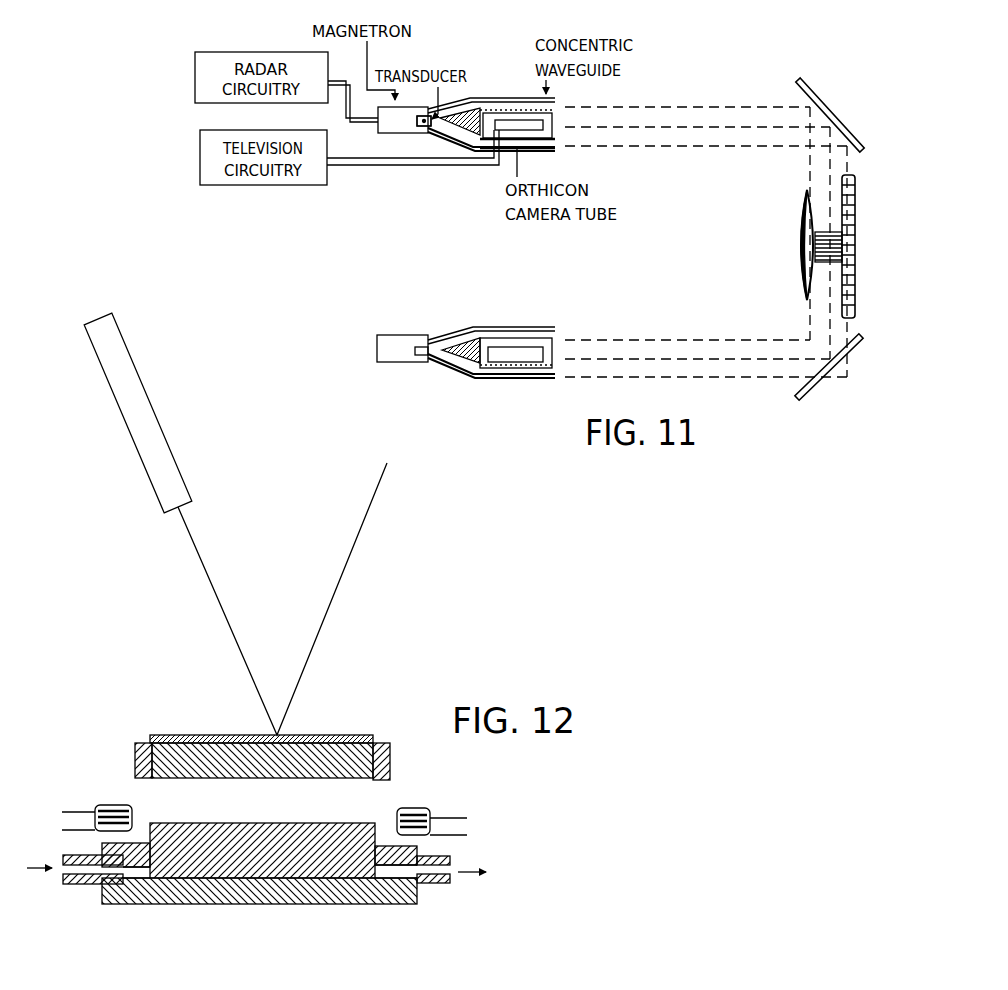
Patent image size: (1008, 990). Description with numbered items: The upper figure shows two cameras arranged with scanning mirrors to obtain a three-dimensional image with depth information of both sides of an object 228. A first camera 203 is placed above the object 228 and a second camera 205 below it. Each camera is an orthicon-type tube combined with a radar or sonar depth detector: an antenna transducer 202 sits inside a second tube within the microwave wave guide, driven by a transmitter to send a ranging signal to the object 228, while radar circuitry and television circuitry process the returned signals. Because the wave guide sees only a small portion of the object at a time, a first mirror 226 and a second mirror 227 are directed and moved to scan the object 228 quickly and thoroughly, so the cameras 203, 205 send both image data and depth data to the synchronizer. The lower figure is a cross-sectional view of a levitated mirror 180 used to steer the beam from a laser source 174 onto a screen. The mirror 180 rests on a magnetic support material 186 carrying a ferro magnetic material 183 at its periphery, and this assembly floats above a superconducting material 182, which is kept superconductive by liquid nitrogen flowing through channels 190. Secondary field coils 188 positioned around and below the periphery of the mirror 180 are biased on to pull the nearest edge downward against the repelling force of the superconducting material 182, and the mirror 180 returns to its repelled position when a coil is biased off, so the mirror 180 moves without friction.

In FIG. 11, the antenna transducer 202 is at (408, 125).
In FIG. 11, the first camera 203 is at (503, 97).
In FIG. 11, the second camera 205 is at (513, 325).
In FIG. 11, the first mirror 226 is at (822, 103).
In FIG. 11, the second mirror 227 is at (836, 358).
In FIG. 11, the object 228 is at (808, 246).
In FIG. 12, the laser source 174 is at (140, 415).
In FIG. 12, the mirror 180 is at (328, 735).
In FIG. 12, the superconducting material 182 is at (300, 824).
In FIG. 12, the ferro magnetic material 183 is at (147, 743).
In FIG. 12, the magnetic support material 186 is at (218, 774).
In FIG. 12, the secondary field coils 188 is at (105, 806).
In FIG. 12, the channels 190 is at (29, 852).